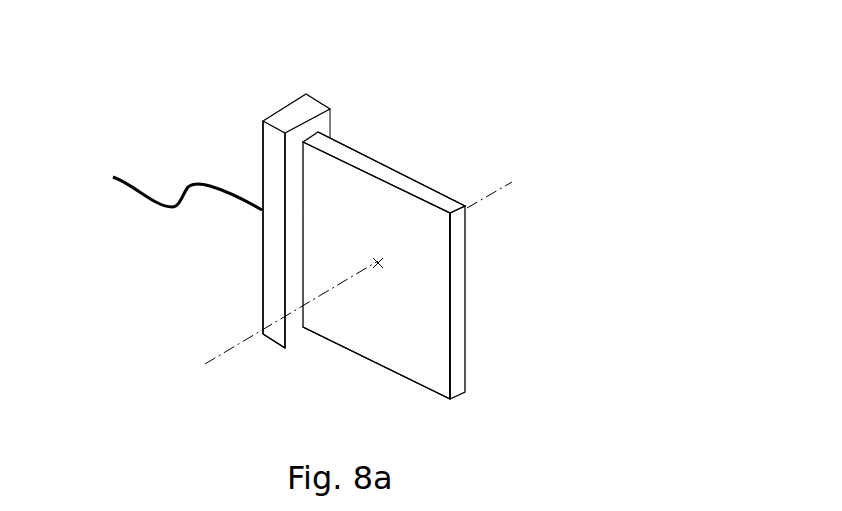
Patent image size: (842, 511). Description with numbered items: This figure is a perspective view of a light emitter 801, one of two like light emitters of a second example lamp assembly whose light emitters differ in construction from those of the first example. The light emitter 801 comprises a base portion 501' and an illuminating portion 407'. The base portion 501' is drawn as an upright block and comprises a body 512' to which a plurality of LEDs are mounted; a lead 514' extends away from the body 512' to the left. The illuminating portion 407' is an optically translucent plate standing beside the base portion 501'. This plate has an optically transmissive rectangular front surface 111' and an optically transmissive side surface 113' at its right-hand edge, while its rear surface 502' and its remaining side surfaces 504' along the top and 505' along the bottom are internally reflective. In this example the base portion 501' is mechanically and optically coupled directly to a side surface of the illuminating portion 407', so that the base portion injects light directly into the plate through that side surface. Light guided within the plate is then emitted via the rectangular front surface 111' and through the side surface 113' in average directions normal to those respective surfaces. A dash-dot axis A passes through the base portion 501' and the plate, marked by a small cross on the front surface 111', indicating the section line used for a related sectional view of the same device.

The light emitter 801 is at (555, 80).
The base portion 501' is at (290, 197).
The body 512' is at (225, 234).
The cable 514' is at (174, 214).
The front surface 111' is at (425, 258).
The side surface 504' is at (384, 158).
The rear surface 502' is at (487, 302).
The side surface 113' is at (498, 312).
The side surface 505' is at (376, 365).
The illuminating portion 407' is at (425, 165).
The axis A is at (210, 372).